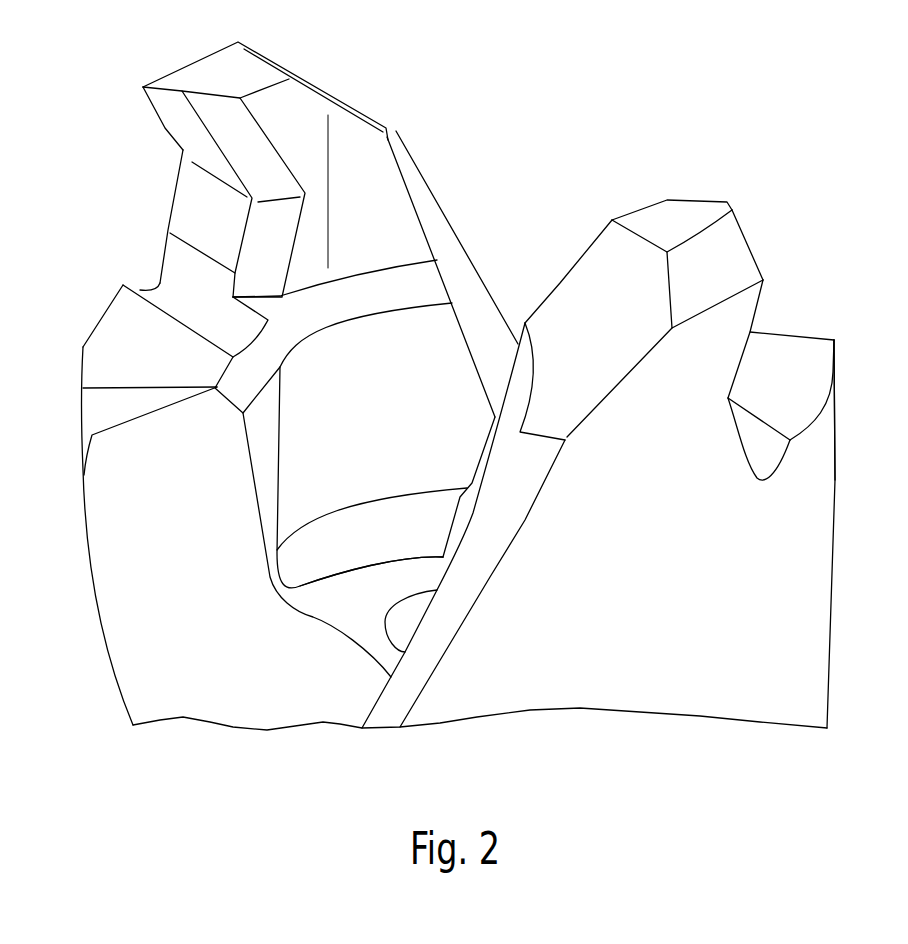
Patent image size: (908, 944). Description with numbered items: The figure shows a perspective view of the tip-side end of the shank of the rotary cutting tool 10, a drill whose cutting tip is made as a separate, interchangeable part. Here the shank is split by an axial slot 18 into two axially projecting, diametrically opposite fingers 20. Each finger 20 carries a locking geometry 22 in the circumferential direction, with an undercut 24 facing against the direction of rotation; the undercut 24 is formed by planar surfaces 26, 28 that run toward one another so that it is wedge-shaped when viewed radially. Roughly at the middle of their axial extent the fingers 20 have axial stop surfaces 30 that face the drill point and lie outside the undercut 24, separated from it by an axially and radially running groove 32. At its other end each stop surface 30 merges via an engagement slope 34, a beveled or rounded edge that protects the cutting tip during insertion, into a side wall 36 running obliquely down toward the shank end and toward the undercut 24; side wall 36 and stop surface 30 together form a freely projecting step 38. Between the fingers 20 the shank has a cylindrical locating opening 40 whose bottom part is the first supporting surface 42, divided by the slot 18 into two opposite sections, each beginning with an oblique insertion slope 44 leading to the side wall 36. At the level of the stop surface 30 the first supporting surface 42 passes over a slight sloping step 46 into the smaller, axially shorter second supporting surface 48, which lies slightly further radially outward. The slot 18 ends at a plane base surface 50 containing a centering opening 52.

The rotary cutting tool 10 is at (485, 688).
The axial slot 18 is at (517, 208).
The fingers 20 is at (205, 58).
The locking geometries 22 is at (127, 96).
The undercuts 24 is at (160, 127).
The planar surface 26 is at (187, 143).
The planar surface 28 is at (168, 222).
The axial stop surfaces 30 is at (120, 330).
The groove 32 is at (162, 282).
The engagement slope 34 is at (108, 403).
The side wall 36 is at (120, 600).
The step 38 is at (820, 480).
The cylindrical locating opening 40 is at (455, 366).
The first supporting surface 42 is at (386, 477).
The insertion slope 44 is at (263, 452).
The sloping step 46 is at (378, 290).
The second supporting surface 48 is at (360, 153).
The base surface 50 is at (342, 607).
The centering opening 52 is at (408, 622).